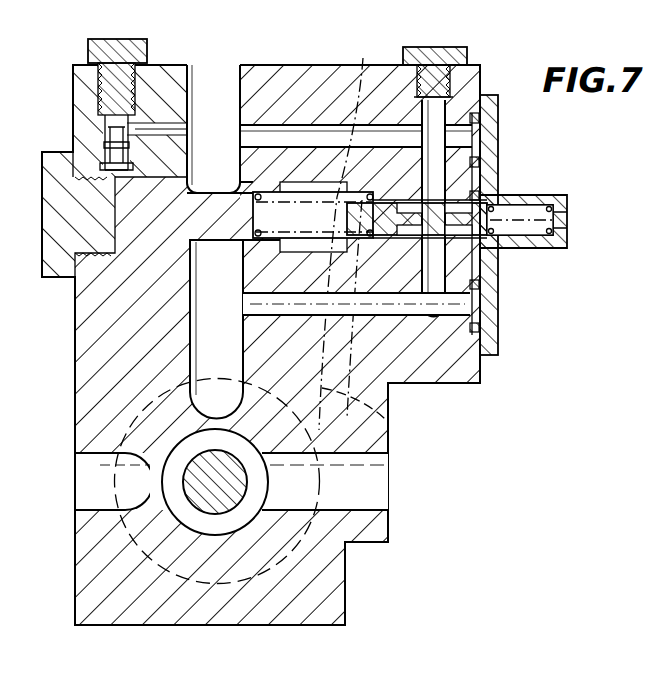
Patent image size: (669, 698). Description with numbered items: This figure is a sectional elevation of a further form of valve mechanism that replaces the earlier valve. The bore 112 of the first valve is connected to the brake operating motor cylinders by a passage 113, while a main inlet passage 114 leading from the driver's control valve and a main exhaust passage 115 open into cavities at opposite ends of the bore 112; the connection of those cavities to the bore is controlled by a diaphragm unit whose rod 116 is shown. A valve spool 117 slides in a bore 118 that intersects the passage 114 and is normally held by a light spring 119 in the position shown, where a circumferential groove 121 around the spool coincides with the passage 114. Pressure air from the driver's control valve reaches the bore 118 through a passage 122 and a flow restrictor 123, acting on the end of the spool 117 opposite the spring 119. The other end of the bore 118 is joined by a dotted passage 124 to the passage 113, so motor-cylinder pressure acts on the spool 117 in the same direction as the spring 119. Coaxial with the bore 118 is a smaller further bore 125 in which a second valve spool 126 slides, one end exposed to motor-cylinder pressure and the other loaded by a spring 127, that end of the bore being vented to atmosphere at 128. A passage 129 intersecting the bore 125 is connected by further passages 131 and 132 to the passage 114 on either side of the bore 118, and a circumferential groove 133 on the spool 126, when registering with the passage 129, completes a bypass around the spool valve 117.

The bore 112 is at (260, 497).
The passage 113 is at (373, 491).
The main inlet passage 114 is at (208, 335).
The main exhaust passage 115 is at (97, 481).
The rod 116 is at (230, 484).
The valve spool 117 is at (150, 225).
The bore 118 is at (300, 190).
The light spring 119 is at (353, 232).
The circumferential groove 121 is at (236, 195).
The passage 122 is at (175, 137).
The flow restrictor 123 is at (105, 147).
The passage 124 is at (387, 420).
The further bore 125 is at (455, 210).
The second valve spool 126 is at (457, 232).
The spring 127 is at (540, 238).
The vent 128 is at (560, 220).
The passage 129 is at (437, 173).
The passage 131 is at (272, 138).
The passage 132 is at (390, 316).
The circumferential groove 133 is at (459, 252).